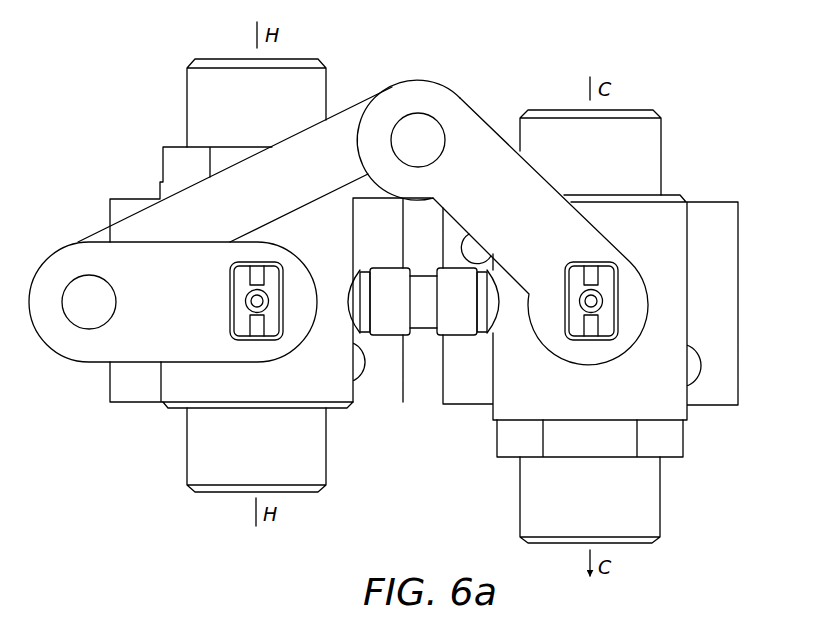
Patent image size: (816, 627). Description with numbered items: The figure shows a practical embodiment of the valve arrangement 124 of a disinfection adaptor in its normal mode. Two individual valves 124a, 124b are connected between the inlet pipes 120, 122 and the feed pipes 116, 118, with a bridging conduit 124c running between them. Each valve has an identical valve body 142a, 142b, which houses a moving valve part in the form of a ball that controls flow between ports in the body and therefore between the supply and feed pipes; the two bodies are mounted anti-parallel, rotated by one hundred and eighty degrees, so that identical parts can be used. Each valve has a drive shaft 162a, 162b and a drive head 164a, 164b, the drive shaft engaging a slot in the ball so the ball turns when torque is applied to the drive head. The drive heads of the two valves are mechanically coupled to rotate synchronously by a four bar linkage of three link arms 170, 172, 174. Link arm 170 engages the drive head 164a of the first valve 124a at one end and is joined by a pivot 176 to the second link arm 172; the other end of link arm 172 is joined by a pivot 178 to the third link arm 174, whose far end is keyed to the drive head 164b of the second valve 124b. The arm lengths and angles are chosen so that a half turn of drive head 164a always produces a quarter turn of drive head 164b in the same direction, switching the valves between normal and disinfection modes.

The feed pipe 116 is at (187, 465).
The feed pipe 118 is at (520, 513).
The inlet pipe 120 is at (187, 77).
The inlet pipe 122 is at (661, 150).
The valve arrangement 124 is at (651, 56).
The first valve 124a is at (140, 118).
The second valve 124b is at (686, 116).
The bridging conduit 124c is at (427, 337).
The valve body 142a is at (347, 409).
The valve body 142b is at (689, 417).
The drive shaft 162a is at (246, 304).
The drive shaft 162b is at (583, 311).
The drive head 164a is at (230, 290).
The drive head 164b is at (611, 333).
The link arm 170 is at (109, 242).
The second link arm 172 is at (357, 103).
The third link arm 174 is at (487, 118).
The pivot 176 is at (90, 330).
The pivot 178 is at (418, 113).